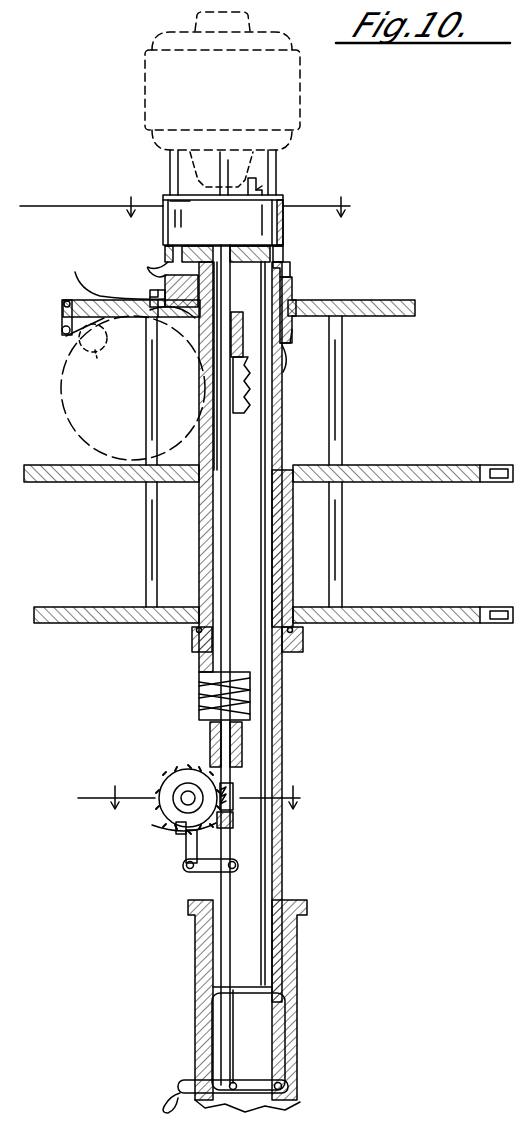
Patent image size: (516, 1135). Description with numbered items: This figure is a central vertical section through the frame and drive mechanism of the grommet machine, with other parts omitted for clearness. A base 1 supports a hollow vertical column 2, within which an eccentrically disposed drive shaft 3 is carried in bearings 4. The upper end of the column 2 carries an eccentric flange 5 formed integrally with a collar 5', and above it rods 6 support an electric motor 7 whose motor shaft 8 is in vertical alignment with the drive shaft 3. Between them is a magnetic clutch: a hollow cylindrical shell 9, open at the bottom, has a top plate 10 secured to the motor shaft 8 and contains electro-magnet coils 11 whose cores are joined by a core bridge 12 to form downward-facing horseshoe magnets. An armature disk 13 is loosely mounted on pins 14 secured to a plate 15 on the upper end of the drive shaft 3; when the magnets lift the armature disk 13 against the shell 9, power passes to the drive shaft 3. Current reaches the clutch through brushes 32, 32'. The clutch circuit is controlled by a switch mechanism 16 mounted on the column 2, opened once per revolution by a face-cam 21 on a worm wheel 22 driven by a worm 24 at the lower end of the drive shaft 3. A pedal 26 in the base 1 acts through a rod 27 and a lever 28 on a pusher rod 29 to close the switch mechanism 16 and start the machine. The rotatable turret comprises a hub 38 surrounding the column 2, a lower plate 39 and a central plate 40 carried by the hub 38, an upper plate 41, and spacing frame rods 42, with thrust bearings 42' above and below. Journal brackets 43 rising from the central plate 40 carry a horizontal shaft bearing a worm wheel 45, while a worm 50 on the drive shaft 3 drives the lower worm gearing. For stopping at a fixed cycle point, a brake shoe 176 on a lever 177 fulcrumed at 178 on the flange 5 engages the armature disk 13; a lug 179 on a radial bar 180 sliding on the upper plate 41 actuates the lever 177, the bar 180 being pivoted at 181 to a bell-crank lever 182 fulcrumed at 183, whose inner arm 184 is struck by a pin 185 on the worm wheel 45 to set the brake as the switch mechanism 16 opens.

The base 1 is at (292, 1092).
The column 2 is at (281, 718).
The drive shaft 3 is at (207, 660).
The bearings 4 is at (210, 333).
The flange 5 is at (303, 306).
The collar 5' is at (318, 316).
The rods 6 is at (170, 170).
The electric motor 7 is at (222, 81).
The motor shaft 8 is at (223, 163).
The shell 9 is at (223, 220).
The top plate 10 is at (190, 201).
The electro-magnet coils 11 is at (198, 208).
The core bridge 12 is at (198, 797).
The armature disk 13 is at (168, 250).
The pins 14 is at (273, 258).
The plate 15 is at (290, 271).
The switch mechanism 16 is at (176, 834).
The face-cam 21 is at (160, 829).
The worm wheel 22 is at (172, 806).
The worm 24 is at (234, 795).
The pedal 26 is at (172, 1098).
The rod 27 is at (236, 1060).
The lever 28 is at (196, 873).
The pusher rod 29 is at (188, 848).
The brush 32 is at (305, 185).
The brush 32' is at (299, 173).
The hub 38 is at (284, 549).
The lower plate 39 is at (378, 609).
The central plate 40 is at (407, 482).
The upper plate 41 is at (415, 308).
The spacing frame rods 42 is at (237, 461).
The thrust bearings 42' is at (272, 498).
The journal brackets 43 is at (217, 425).
The worm wheel 45 is at (62, 432).
The worm 50 is at (200, 695).
The brake shoe 176 is at (160, 283).
The lever 177 is at (185, 290).
The fulcrum 178 is at (104, 276).
The lug 179 is at (190, 318).
The bar 180 is at (95, 302).
The pivot 181 is at (62, 303).
The bell-crank lever 182 is at (62, 330).
The fulcrum 183 is at (74, 337).
The inner arm 184 is at (99, 347).
The pin 185 is at (118, 374).